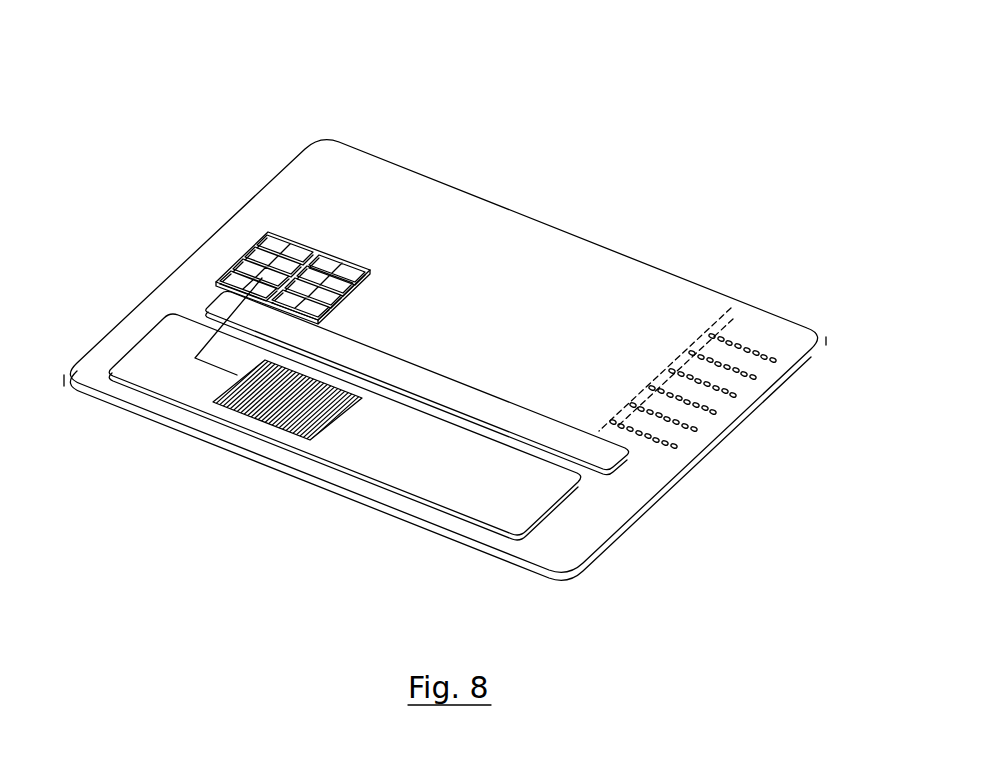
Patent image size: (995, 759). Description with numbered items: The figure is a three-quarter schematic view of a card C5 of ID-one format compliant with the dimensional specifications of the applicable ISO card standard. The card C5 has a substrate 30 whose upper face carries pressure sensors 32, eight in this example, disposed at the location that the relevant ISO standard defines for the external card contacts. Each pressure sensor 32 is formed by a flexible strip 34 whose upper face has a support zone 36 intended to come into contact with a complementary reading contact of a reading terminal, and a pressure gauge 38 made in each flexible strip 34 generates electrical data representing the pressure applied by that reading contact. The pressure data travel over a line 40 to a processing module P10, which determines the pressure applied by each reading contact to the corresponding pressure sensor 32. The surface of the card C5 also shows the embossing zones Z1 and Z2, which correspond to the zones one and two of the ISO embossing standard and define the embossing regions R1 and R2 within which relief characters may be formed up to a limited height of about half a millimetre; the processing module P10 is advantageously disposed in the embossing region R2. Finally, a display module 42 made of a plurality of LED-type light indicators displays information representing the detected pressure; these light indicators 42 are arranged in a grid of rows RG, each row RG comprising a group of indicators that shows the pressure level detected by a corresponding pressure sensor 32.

The card C5 is at (589, 157).
The substrate 30 is at (585, 262).
The pressure sensor 32 is at (292, 240).
The flexible strip 34 is at (330, 250).
The support zone 36 is at (317, 258).
The pressure gauge 38 is at (257, 242).
The line 40 is at (202, 347).
The display module 42 is at (741, 409).
The embossing zone Z1 is at (403, 362).
The embossing zone Z2 is at (358, 456).
The embossing region R1 is at (457, 384).
The embossing region R2 is at (420, 491).
The row of light indicators RG is at (736, 310).
The processing module P10 is at (262, 410).